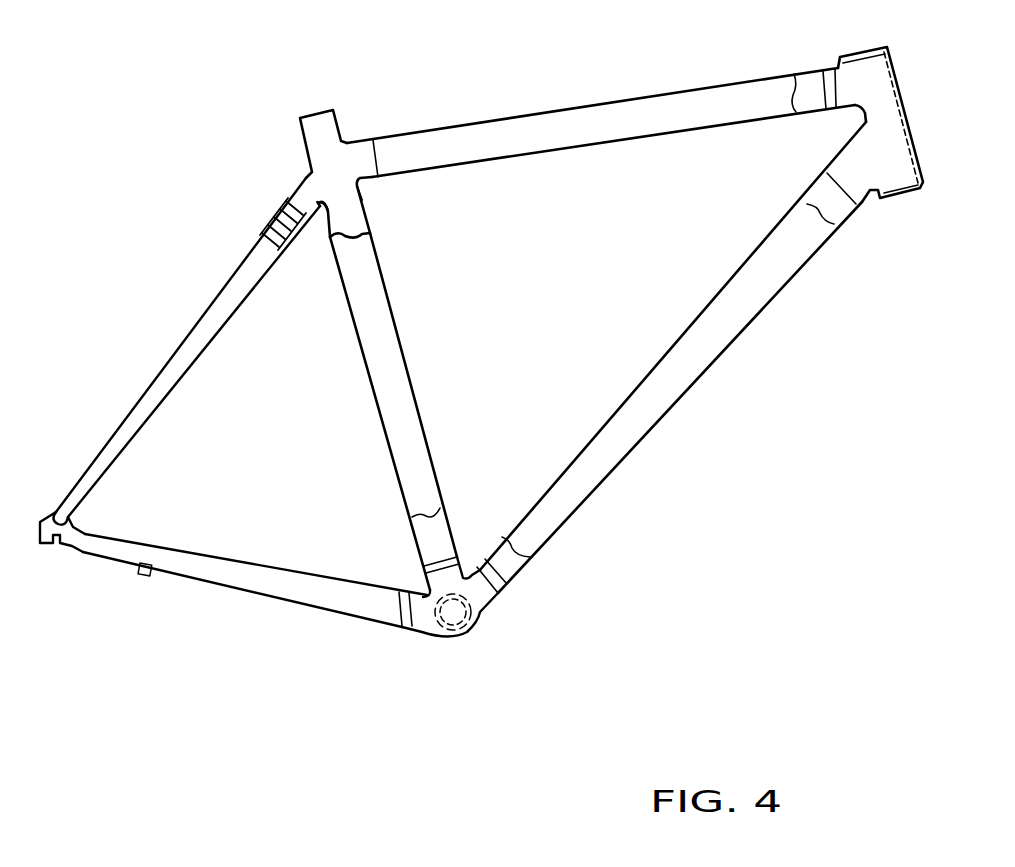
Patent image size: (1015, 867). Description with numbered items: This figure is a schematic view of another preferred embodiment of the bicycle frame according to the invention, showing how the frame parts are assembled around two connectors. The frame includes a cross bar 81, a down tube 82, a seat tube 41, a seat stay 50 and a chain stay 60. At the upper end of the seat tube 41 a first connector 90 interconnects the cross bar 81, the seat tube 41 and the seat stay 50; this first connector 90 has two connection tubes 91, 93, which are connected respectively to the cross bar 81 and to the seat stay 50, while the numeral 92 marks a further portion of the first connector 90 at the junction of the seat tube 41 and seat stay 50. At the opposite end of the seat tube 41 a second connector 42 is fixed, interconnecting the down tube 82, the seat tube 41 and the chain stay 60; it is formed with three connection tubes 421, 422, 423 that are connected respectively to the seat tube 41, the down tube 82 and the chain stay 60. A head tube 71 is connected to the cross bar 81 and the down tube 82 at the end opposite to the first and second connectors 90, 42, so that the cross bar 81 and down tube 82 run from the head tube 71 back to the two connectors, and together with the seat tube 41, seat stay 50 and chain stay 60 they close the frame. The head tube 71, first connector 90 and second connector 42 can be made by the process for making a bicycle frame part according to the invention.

The seat tube 41 is at (403, 350).
The second connector 42 is at (496, 606).
The connection tube 421 is at (462, 573).
The connection tube 422 is at (500, 592).
The connection tube 423 is at (423, 633).
The seat stay 50 is at (192, 330).
The chain stay 60 is at (310, 572).
The head tube 71 is at (893, 137).
The cross bar 81 is at (540, 112).
The down tube 82 is at (723, 353).
The first connector 90 is at (346, 118).
The connection tube 91 is at (372, 186).
The seat stay socket arm of seat lug 92 is at (322, 206).
The connection tube 93 is at (305, 178).